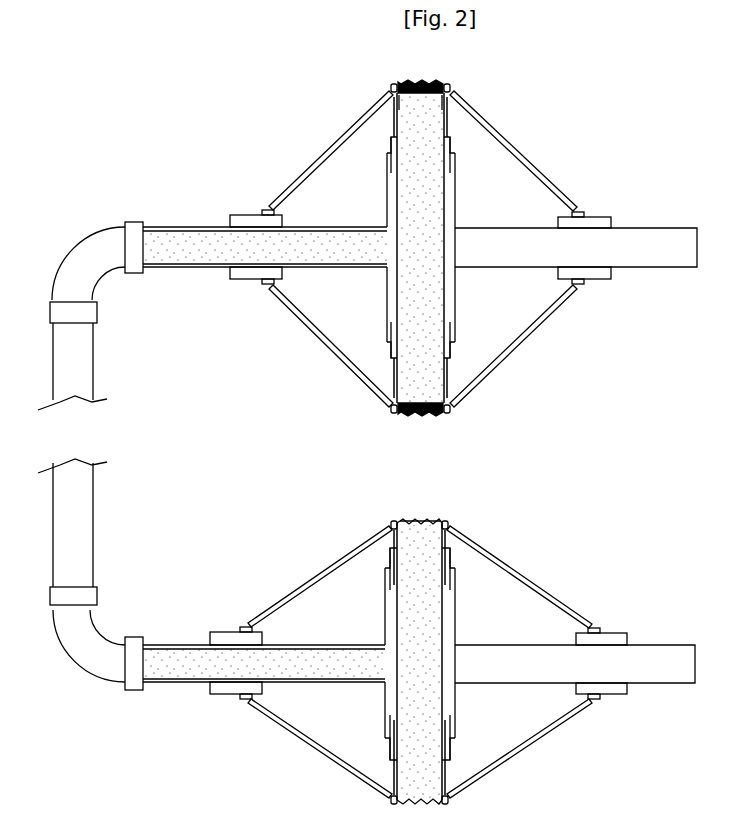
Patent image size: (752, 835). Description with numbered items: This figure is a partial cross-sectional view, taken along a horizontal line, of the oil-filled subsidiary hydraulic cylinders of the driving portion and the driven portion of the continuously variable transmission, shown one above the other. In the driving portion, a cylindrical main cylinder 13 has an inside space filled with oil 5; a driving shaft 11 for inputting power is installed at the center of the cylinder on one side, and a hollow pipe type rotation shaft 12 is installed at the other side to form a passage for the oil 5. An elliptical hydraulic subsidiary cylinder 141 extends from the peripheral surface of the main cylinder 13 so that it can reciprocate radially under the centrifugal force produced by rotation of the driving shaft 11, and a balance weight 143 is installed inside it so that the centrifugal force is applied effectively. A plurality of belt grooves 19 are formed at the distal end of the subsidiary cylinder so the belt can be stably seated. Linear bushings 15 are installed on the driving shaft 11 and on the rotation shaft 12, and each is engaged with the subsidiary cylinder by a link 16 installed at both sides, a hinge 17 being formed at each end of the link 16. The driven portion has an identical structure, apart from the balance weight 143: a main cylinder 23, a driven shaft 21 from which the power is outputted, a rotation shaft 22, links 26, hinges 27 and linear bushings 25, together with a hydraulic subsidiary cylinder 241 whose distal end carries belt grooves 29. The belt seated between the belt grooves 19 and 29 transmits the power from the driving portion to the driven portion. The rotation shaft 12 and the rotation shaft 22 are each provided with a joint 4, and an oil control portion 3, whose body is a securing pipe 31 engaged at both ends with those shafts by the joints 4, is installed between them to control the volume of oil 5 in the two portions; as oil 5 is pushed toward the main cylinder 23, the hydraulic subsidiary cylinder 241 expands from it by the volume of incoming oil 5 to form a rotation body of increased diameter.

The oil control portion 3 is at (130, 428).
The securing pipe 31 is at (92, 368).
The joint 4 is at (105, 237).
The oil 5 is at (160, 232).
The driving shaft 11 is at (668, 267).
The rotation shaft 12 is at (185, 270).
The main cylinder 13 is at (455, 185).
The linear bushing 15 is at (245, 215).
The link 16 is at (330, 140).
The hinge 17 is at (391, 87).
The belt groove 19 is at (407, 80).
The hydraulic subsidiary cylinder 141 is at (441, 83).
The balance weight 143 is at (420, 95).
The driven shaft 21 is at (652, 672).
The rotation shaft 22 is at (170, 685).
The main cylinder 23 is at (455, 612).
The linear bushing 25 is at (220, 632).
The link 26 is at (322, 570).
The hinge 27 is at (391, 525).
The belt groove 29 is at (407, 523).
The hydraulic subsidiary cylinder 241 is at (440, 525).